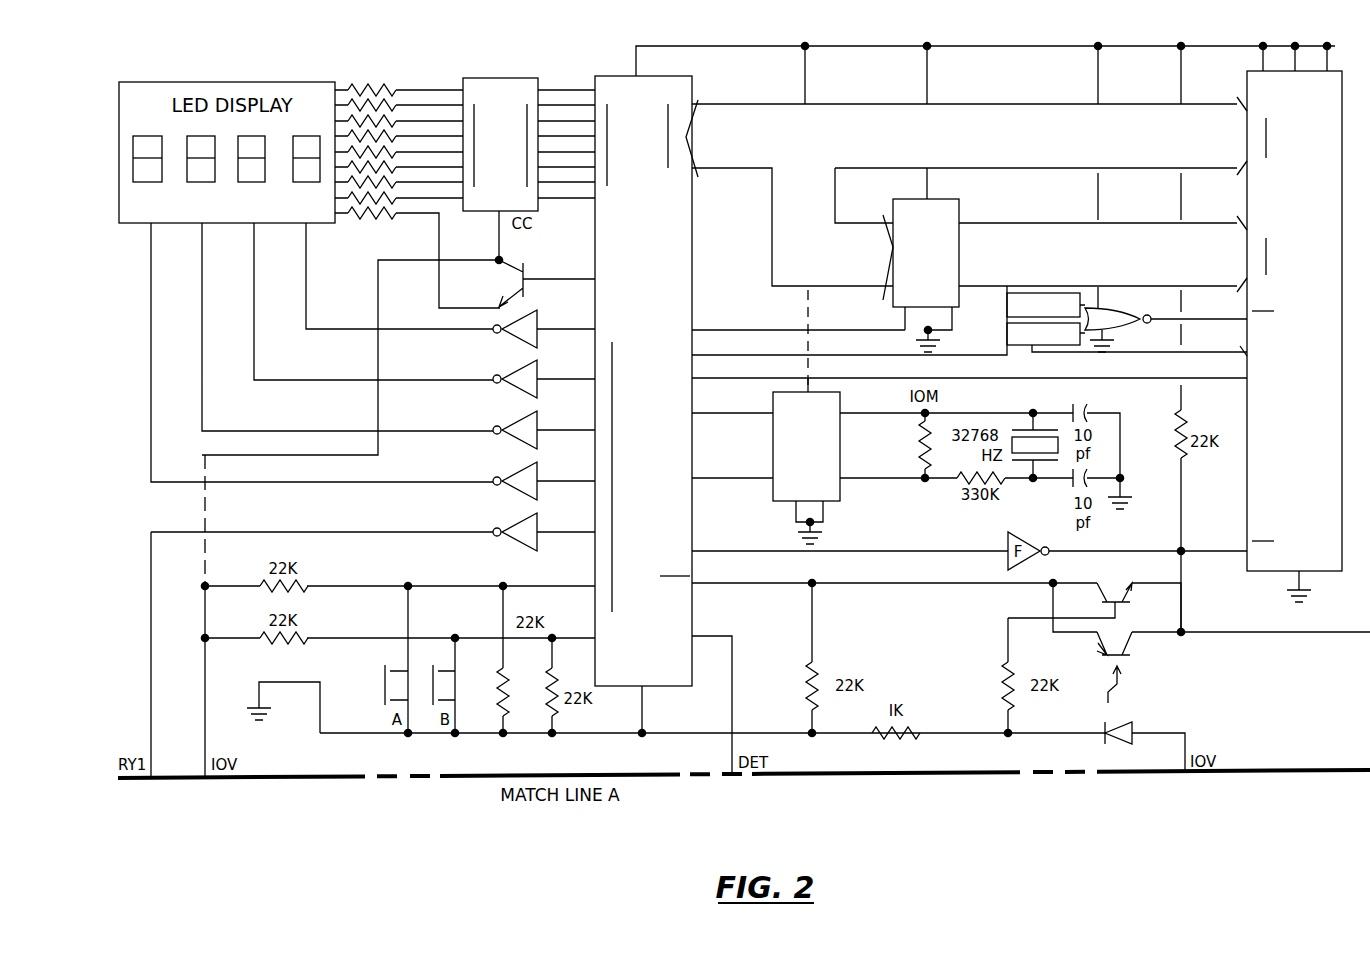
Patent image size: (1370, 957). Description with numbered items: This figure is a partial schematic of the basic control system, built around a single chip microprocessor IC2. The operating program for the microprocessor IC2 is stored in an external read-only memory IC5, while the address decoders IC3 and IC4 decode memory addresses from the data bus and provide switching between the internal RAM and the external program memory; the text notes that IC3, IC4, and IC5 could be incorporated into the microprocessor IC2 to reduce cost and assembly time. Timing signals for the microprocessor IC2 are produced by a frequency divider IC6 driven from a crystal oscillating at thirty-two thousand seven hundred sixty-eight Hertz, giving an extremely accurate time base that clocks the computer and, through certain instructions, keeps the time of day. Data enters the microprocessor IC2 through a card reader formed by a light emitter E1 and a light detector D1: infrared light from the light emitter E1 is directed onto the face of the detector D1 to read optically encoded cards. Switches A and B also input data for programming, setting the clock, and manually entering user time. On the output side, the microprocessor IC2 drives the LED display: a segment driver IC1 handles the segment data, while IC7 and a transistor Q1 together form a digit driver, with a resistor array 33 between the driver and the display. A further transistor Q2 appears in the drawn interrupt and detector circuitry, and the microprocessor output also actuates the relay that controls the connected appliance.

The resistor array 33 is at (417, 184).
The segment driver IC1 is at (500, 133).
The single chip microprocessor IC2 is at (658, 245).
The address decoder IC3 is at (944, 263).
The address decoder IC4 is at (1079, 322).
The external read-only memory IC5 is at (1326, 350).
The frequency divider IC6 is at (822, 452).
The digit driver IC7 is at (483, 465).
The transistor Q1 is at (525, 259).
The transistor Q2 is at (1084, 600).
The light detector D1 is at (1125, 648).
The light emitter E1 is at (1129, 728).